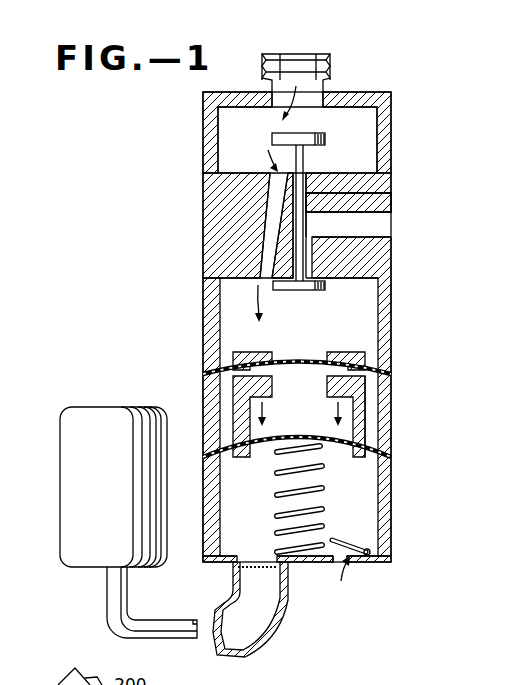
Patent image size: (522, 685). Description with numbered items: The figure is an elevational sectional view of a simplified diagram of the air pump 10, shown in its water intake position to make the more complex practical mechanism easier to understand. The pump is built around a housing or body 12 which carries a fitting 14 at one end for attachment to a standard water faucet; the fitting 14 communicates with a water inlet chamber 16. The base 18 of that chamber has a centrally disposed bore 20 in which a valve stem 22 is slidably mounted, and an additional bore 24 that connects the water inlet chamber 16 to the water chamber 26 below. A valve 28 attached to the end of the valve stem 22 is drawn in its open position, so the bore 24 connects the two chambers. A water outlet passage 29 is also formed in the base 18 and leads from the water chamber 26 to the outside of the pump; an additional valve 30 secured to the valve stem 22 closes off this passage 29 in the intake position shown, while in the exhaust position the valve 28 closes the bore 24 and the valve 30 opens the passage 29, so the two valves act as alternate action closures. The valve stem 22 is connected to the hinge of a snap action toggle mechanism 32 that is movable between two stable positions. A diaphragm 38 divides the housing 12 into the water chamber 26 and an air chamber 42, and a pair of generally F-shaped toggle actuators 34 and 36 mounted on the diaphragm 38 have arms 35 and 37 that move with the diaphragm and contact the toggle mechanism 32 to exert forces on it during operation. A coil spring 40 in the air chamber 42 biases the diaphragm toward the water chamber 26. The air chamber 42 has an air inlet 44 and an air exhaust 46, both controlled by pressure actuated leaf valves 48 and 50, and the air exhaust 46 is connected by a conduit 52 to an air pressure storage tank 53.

The air pump 10 is at (399, 48).
The housing 12 is at (391, 157).
The fitting 14 is at (330, 62).
The water inlet chamber 16 is at (362, 160).
The base 18 is at (248, 214).
The bore 20 is at (380, 178).
The valve stem 22 is at (385, 203).
The additional bore 24 is at (268, 242).
The water chamber 26 is at (362, 324).
The valve 28 is at (325, 135).
The water outlet passage 29 is at (380, 223).
The additional valve 30 is at (325, 286).
The snap action toggle mechanism 32 is at (291, 358).
The toggle actuator 34 is at (248, 431).
The arm 35 is at (255, 350).
The toggle actuator 36 is at (367, 428).
The arm 37 is at (270, 398).
The diaphragm 38 is at (343, 448).
The coil spring 40 is at (313, 509).
The air chamber 42 is at (258, 507).
The air inlet 44 is at (334, 578).
The air exhaust 46 is at (258, 535).
The pressure actuated leaf valve 48 is at (357, 522).
The pressure actuated leaf valve 50 is at (245, 576).
The conduit 52 is at (288, 603).
The air pressure storage tank 53 is at (131, 402).